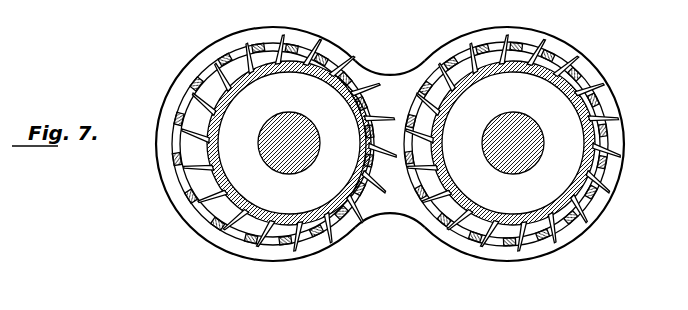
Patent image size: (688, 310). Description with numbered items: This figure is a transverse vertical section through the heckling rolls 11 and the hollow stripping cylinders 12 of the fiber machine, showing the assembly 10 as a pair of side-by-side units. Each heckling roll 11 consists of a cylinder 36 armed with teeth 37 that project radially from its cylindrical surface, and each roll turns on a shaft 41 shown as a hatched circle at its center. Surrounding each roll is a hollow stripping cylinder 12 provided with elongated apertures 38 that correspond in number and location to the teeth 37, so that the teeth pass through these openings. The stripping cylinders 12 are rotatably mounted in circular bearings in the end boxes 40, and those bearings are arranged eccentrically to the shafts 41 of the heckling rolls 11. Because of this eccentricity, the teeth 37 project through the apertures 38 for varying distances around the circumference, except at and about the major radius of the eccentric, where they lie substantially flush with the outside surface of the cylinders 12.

The rotary pump 10 is at (409, 155).
The heckling rolls 11 is at (307, 243).
The hollow stripping cylinders 12 is at (192, 200).
The cylinders 36 is at (266, 224).
The teeth 37 is at (212, 82).
The elongated apertures 38 is at (196, 85).
The end boxes 40 is at (388, 83).
The shafts 41 is at (265, 163).